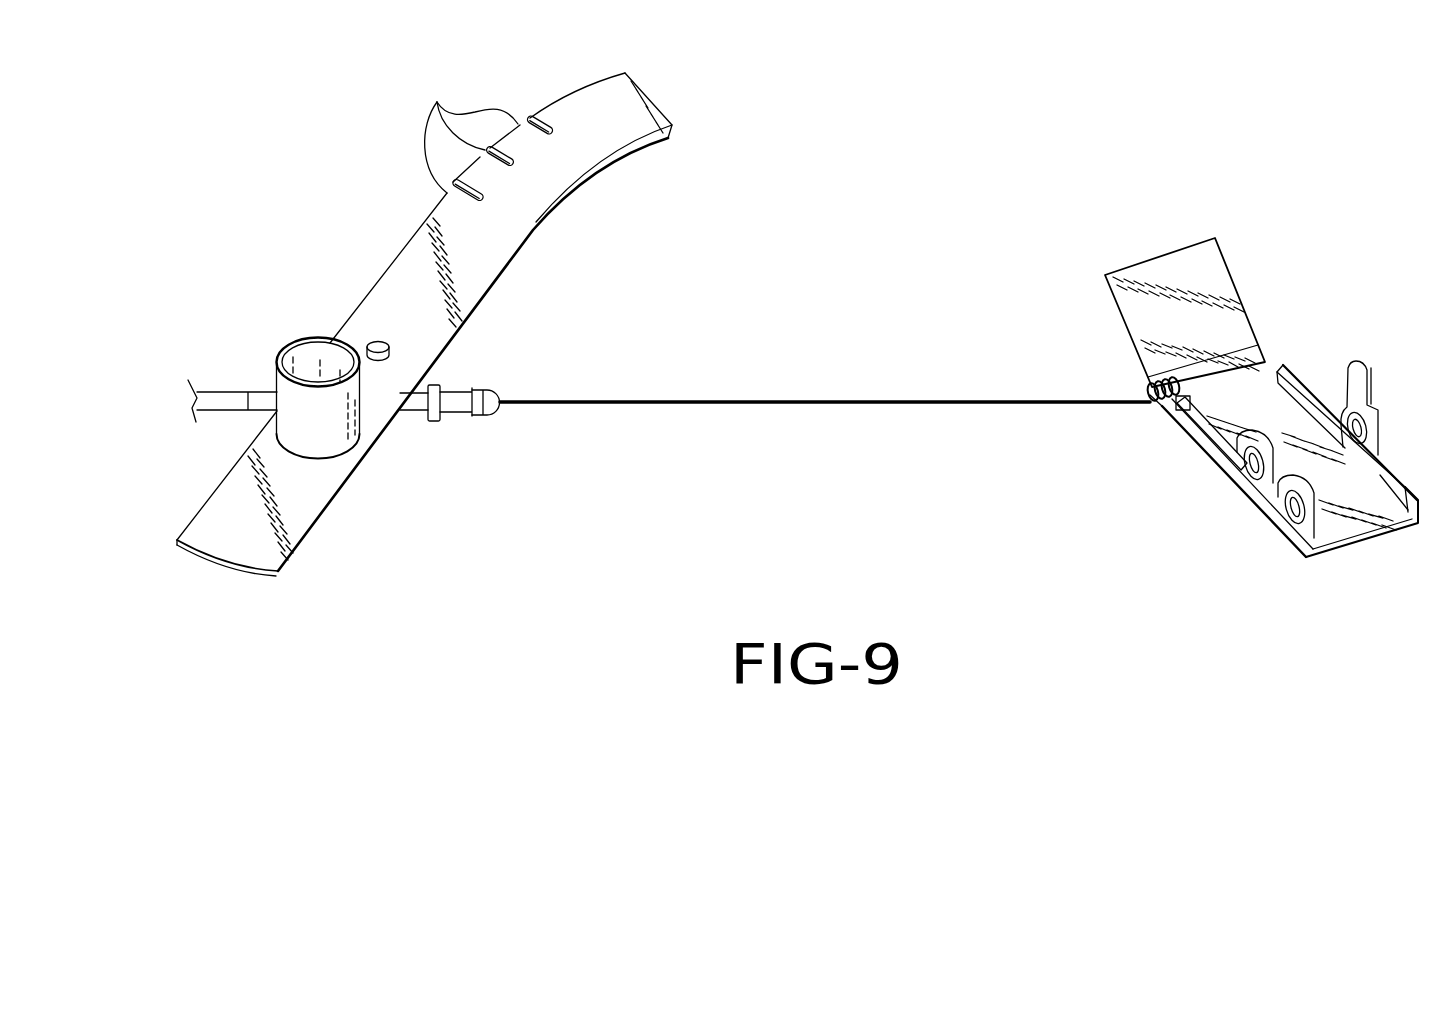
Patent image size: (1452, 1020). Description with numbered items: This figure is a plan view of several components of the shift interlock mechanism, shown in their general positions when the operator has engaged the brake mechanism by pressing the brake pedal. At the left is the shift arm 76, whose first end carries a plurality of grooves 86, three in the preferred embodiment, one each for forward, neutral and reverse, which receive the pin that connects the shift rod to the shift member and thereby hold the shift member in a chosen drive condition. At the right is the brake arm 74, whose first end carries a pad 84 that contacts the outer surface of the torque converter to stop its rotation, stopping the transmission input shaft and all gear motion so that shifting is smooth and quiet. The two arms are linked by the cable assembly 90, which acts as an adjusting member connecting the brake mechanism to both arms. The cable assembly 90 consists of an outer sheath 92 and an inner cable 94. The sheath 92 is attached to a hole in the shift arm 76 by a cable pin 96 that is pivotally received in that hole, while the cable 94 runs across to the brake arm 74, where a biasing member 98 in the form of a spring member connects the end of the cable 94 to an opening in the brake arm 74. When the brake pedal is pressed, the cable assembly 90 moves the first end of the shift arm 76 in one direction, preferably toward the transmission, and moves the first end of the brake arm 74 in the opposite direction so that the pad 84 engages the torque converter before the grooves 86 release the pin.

The brake arm 74 is at (1267, 370).
The shift arm 76 is at (477, 260).
The pad 84 is at (1172, 258).
The grooves 86 is at (488, 137).
The cable assembly 90 is at (233, 361).
The sheath 92 is at (500, 410).
The cable 94 is at (865, 405).
The cable pin 96 is at (390, 343).
The biasing member 98 is at (1150, 387).